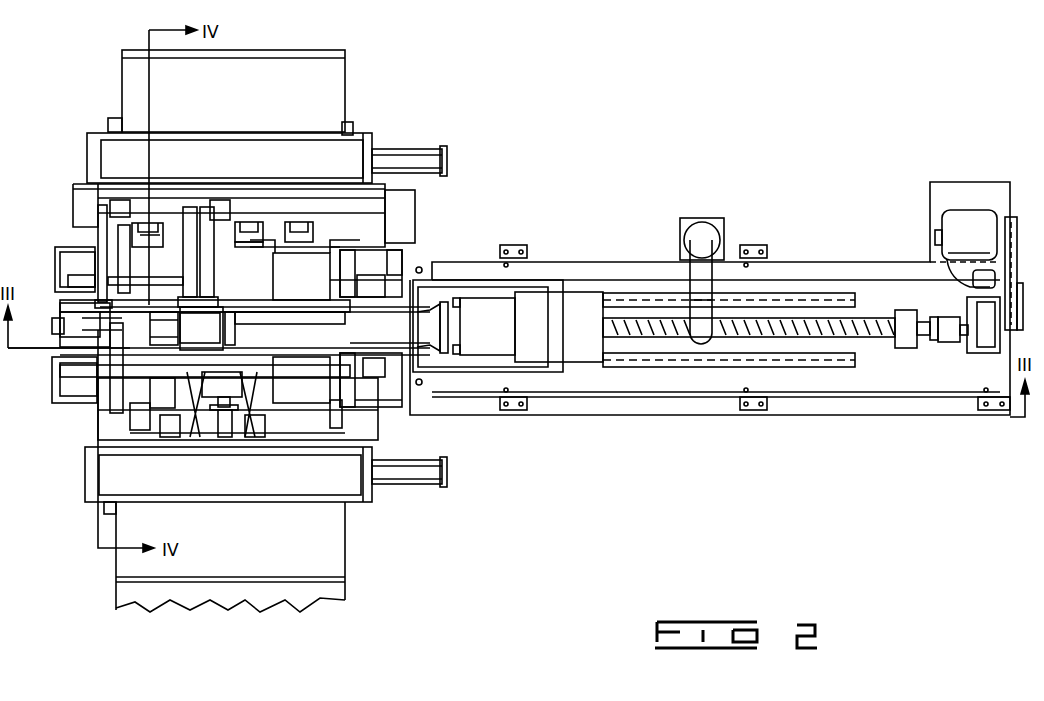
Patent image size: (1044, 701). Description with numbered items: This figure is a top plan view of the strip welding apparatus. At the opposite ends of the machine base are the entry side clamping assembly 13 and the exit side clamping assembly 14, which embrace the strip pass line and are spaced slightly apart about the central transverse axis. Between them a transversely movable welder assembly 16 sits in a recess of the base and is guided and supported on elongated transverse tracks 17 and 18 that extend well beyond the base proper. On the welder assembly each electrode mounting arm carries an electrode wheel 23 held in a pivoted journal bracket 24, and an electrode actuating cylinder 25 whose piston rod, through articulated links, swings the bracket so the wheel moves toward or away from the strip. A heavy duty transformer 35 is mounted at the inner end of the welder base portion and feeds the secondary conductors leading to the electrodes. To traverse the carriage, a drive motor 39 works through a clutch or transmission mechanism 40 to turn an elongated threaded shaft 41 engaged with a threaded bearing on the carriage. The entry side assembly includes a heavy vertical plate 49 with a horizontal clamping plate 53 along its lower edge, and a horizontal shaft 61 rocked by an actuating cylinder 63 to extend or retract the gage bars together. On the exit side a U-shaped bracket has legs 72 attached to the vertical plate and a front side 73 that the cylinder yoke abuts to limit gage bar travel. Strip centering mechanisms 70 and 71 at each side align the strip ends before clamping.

The entry side clamping assembly 13 is at (304, 279).
The exit side clamping assembly 14 is at (304, 398).
The welder assembly 16 is at (332, 334).
The guiding and supporting track 17 is at (803, 292).
The guiding and supporting track 18 is at (618, 362).
The electrode wheel 23 is at (62, 328).
The journal bracket 24 is at (80, 312).
The electrode actuating cylinder 25 is at (215, 316).
The transformer 35 is at (540, 305).
The drive motor 39 is at (965, 222).
The clutch or transmission mechanism 40 is at (1022, 332).
The threaded shaft 41 is at (848, 330).
The vertical plate 49 is at (178, 264).
The horizontal clamping plate 53 is at (338, 260).
The horizontal shaft 61 is at (277, 235).
The actuating cylinder 63 is at (225, 232).
The strip centering mechanism 70 is at (347, 160).
The strip centering mechanism 71 is at (352, 488).
The legs of U-shaped bracket 72 is at (192, 386).
The front side of U-shaped bracket 73 is at (215, 438).